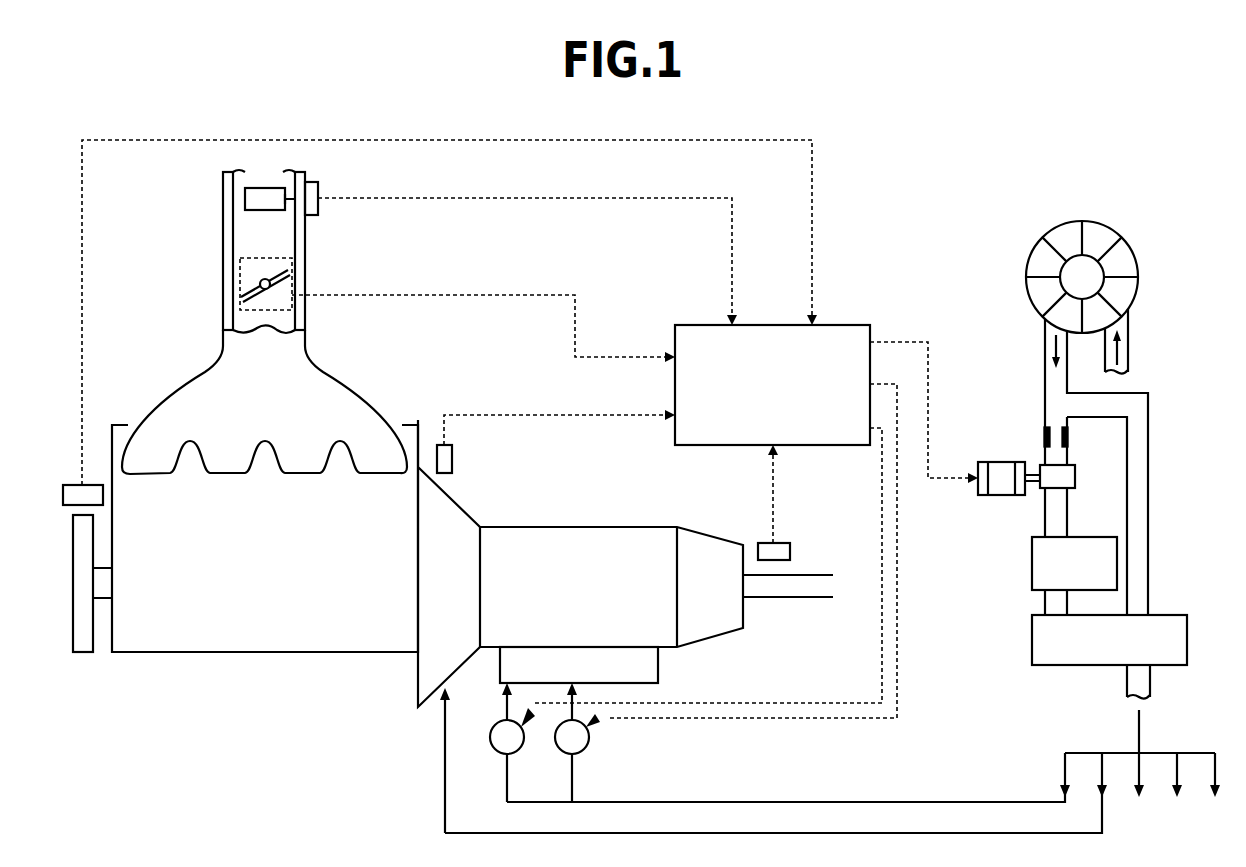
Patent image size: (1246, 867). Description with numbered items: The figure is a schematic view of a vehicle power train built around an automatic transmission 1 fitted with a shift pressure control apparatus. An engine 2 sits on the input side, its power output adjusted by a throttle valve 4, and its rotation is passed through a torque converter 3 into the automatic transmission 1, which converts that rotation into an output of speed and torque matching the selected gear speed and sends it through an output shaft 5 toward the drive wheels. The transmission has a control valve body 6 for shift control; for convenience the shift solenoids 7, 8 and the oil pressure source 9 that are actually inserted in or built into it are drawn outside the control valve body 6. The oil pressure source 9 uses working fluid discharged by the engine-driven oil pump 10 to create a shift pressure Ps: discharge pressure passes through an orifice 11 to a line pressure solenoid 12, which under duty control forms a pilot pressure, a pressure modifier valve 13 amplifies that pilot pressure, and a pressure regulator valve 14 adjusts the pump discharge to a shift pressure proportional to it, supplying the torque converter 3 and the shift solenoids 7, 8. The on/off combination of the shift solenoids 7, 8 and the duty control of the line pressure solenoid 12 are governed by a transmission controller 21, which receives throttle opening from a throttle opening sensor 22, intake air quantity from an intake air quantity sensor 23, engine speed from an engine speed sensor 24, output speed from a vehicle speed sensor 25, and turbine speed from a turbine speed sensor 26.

The automatic transmission 1 is at (568, 521).
The engine 2 is at (412, 425).
The torque converter 3 is at (465, 508).
The throttle valve 4 is at (252, 288).
The output shaft 5 is at (805, 600).
The control valve body 6 is at (660, 663).
The shift solenoid 7 is at (493, 752).
The shift solenoid 8 is at (590, 745).
The oil pressure source 9 is at (1167, 468).
The oil pump 10 is at (1138, 261).
The orifice 11 is at (1043, 437).
The line pressure solenoid 12 is at (978, 497).
The pressure modifier valve 13 is at (1032, 573).
The pressure regulator valve 14 is at (1032, 640).
The transmission controller 21 is at (865, 325).
The throttle opening sensor 22 is at (283, 247).
The intake air quantity sensor 23 is at (318, 183).
The engine speed sensor 24 is at (63, 486).
The vehicle speed sensor 25 is at (790, 552).
The turbine speed sensor 26 is at (452, 456).